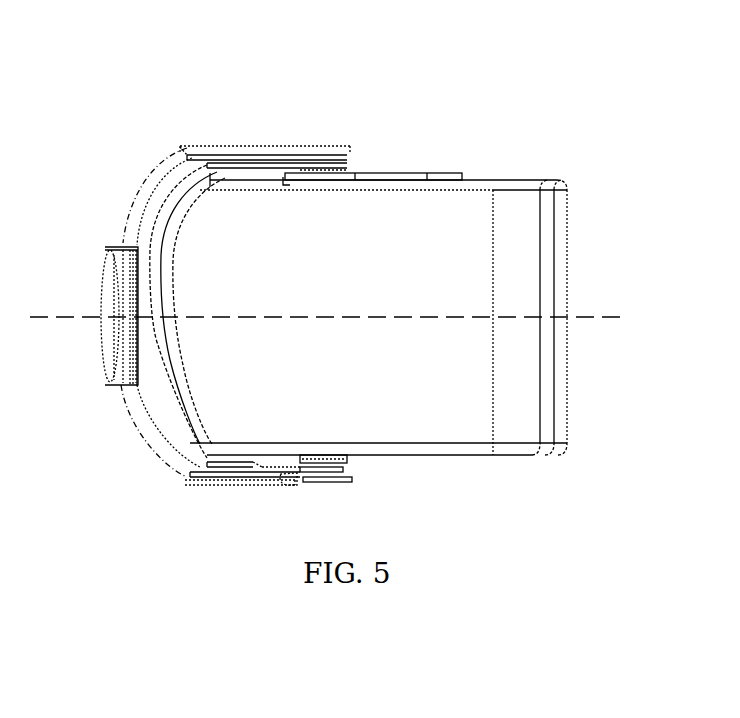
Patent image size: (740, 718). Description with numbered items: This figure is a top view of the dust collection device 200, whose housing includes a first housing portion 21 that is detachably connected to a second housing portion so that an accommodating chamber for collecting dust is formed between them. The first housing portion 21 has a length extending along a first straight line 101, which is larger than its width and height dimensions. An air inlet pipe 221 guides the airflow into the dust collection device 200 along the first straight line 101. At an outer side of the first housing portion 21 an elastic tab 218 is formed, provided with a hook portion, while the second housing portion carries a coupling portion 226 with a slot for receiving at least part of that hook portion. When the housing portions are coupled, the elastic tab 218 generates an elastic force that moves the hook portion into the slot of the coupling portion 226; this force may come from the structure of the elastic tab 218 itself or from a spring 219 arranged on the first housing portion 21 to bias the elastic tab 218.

The dust collection device 200 is at (447, 89).
The first housing portion 21 is at (516, 186).
The spring 219 is at (350, 165).
The elastic tab 218 is at (330, 162).
The coupling portion 226 is at (247, 153).
The air inlet pipe 221 is at (123, 377).
The first straight line 101 is at (603, 317).